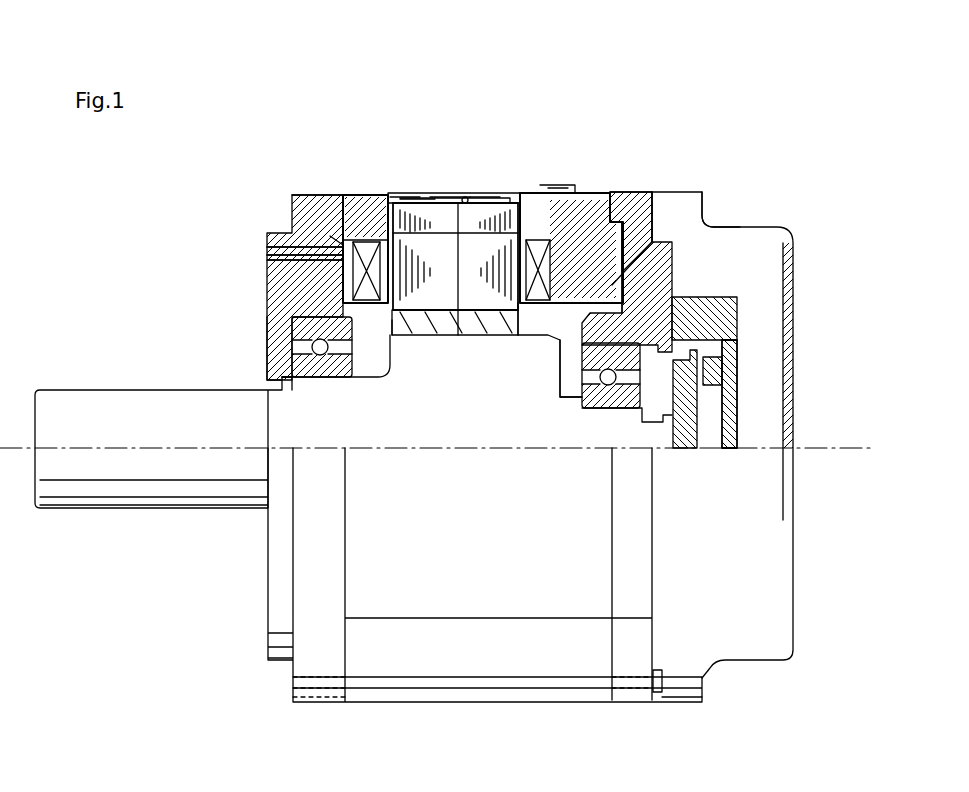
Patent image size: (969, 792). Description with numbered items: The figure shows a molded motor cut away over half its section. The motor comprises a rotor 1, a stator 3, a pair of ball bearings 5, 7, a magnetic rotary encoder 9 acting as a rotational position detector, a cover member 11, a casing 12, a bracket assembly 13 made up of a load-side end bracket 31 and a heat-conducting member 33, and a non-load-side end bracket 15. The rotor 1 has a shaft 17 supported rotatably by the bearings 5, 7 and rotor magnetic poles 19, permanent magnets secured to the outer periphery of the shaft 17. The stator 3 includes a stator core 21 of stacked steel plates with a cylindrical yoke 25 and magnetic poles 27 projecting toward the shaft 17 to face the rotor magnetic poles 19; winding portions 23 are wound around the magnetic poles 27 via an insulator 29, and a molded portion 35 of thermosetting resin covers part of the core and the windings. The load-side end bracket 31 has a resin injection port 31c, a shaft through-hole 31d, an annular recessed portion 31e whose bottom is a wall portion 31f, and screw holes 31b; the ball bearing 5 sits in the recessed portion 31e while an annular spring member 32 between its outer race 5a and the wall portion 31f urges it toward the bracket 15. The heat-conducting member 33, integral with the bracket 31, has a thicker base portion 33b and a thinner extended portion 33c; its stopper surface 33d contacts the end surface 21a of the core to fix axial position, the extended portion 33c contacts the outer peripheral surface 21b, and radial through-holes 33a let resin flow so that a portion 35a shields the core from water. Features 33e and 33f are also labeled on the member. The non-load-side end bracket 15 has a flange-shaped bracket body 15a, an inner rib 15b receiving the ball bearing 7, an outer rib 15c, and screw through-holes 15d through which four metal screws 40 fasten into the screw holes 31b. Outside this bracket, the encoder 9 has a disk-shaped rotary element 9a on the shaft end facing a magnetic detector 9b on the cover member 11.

The rotor 1 is at (310, 428).
The stator 3 is at (330, 235).
The ball bearing 5 is at (297, 380).
The outer race 5a is at (280, 330).
The ball bearing 7 is at (625, 353).
The magnetic rotary encoder 9 is at (770, 394).
The rotary element 9a is at (690, 400).
The magnetic detector 9b is at (722, 368).
The cover member 11 is at (712, 310).
The casing 12 is at (785, 262).
The bracket assembly 13 is at (305, 222).
The non-load-side end bracket 15 is at (655, 232).
The bracket body 15a is at (700, 215).
The inner rib 15b is at (582, 330).
The outer rib 15c is at (637, 245).
The screw through-hole 15d is at (637, 685).
The shaft 17 is at (333, 418).
The rotor magnetic poles 19 is at (417, 332).
The stator core 21 is at (470, 322).
The end surface 21a is at (445, 320).
The outer peripheral surface 21b is at (480, 203).
The winding portions 23 is at (535, 245).
The yoke 25 is at (458, 340).
The magnetic poles 27 is at (492, 297).
The insulator 29 is at (553, 200).
The load-side end bracket 31 is at (335, 205).
The screw hole 31b is at (313, 685).
The resin injection port 31c is at (280, 252).
The shaft through-hole 31d is at (288, 380).
The annular recessed portion 31e is at (300, 325).
The wall portion 31f is at (282, 350).
The annular spring member 32 is at (300, 347).
The heat-conducting member 33 is at (430, 200).
The through-holes 33a is at (380, 200).
The base portion 33b is at (350, 200).
The extended portion 33c is at (485, 200).
The stopper surface 33d is at (395, 200).
The stator insulator 33e is at (465, 200).
The stator slot 33f is at (455, 200).
The molded portion 35 is at (605, 207).
The portion of the molded portion 35a is at (410, 200).
The metal screws 40 is at (518, 680).